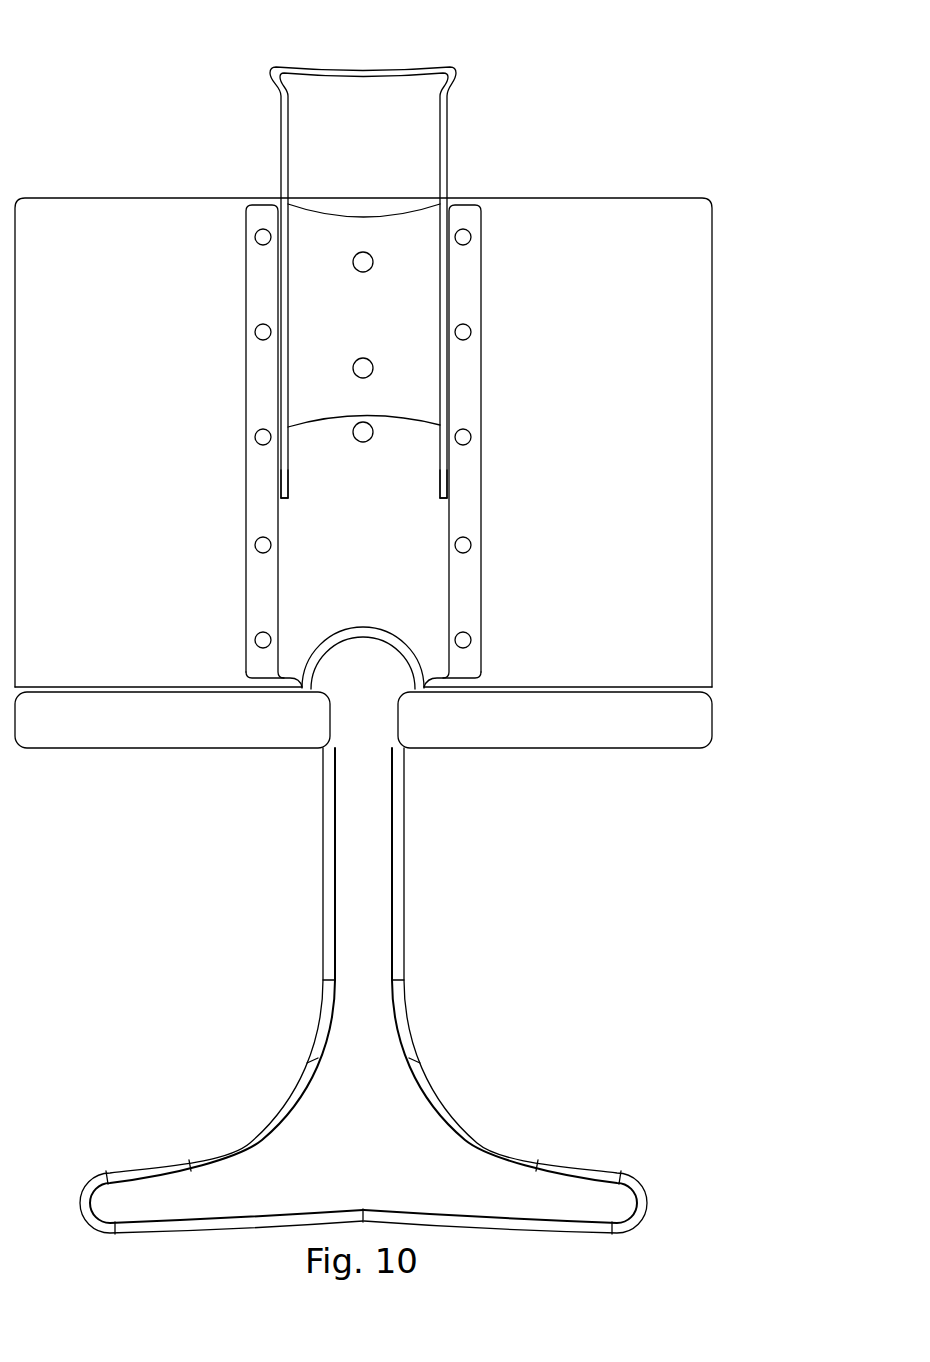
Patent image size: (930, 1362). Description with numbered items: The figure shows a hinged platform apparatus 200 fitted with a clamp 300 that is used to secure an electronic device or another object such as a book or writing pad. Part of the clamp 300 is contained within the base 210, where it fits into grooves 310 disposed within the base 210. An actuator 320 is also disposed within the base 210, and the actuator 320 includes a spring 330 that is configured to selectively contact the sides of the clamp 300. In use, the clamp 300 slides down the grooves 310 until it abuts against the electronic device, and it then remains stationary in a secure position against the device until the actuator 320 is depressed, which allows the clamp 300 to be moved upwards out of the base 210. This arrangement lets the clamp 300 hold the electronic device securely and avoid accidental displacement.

The hinged platform apparatus 200 is at (562, 58).
The base 210 is at (577, 210).
The clamp 300 is at (281, 127).
The grooves 310 is at (288, 458).
The actuator 320 is at (388, 228).
The spring 330 is at (340, 410).